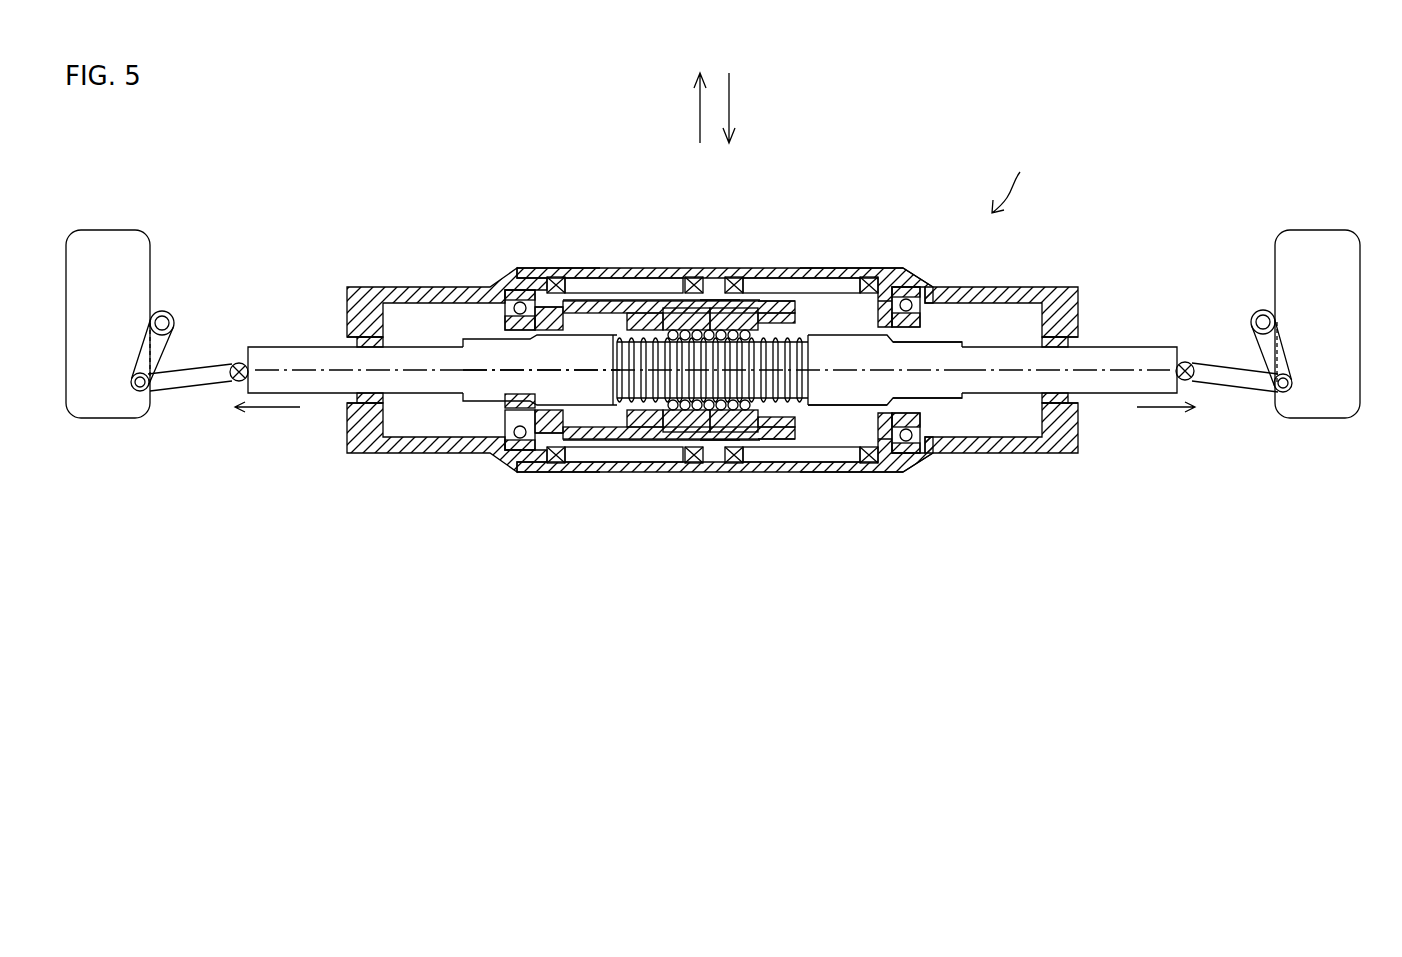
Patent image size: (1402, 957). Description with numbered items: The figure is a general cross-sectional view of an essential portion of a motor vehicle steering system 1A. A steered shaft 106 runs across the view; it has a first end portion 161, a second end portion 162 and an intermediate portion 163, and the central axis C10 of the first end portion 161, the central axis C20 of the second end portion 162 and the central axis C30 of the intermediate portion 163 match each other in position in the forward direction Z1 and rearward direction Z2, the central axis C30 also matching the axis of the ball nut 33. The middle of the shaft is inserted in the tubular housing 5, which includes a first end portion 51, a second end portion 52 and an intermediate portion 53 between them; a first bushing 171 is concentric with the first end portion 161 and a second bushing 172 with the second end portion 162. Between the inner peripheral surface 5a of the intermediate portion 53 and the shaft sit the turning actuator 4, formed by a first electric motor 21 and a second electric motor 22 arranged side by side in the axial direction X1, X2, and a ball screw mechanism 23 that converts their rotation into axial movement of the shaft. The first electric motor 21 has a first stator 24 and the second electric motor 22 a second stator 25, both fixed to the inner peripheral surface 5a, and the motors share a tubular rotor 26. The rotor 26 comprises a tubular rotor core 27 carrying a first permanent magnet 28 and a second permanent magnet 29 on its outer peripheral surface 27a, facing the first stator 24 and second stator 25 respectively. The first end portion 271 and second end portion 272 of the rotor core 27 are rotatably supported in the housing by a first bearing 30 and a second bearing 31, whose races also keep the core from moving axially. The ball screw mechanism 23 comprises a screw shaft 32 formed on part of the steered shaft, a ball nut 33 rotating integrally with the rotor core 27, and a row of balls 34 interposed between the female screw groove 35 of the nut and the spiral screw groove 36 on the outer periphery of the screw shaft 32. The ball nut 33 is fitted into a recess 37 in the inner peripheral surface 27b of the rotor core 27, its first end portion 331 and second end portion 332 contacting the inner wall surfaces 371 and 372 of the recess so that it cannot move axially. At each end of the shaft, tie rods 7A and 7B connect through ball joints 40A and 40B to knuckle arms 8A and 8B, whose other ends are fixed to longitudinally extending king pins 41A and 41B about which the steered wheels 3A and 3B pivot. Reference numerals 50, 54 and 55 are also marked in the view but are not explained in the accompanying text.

The motor vehicle steering system 1A is at (1015, 177).
The steered wheel 3A is at (112, 245).
The steered wheel 3B is at (1318, 240).
The turning actuator 4 is at (712, 318).
The housing 5 is at (786, 258).
The inner peripheral surface 5a is at (713, 310).
The tie rod 7A is at (172, 393).
The tie rod 7B is at (1255, 393).
The knuckle arm 8A is at (140, 366).
The knuckle arm 8B is at (1286, 363).
The first electric motor 21 is at (577, 267).
The second electric motor 22 is at (861, 265).
The ball screw mechanism 23 is at (713, 297).
The first stator 24 is at (625, 286).
The second stator 25 is at (830, 284).
The rotor 26 is at (544, 298).
The rotor core 27 is at (711, 432).
The outer peripheral surface 27a is at (542, 425).
The inner peripheral surface 27b is at (570, 420).
The first permanent magnet 28 is at (707, 363).
The second permanent magnet 29 is at (800, 433).
The first bearing 30 is at (519, 440).
The second bearing 31 is at (905, 440).
The screw shaft 32 is at (834, 416).
The ball nut 33 is at (698, 346).
The balls 34 is at (745, 418).
The female screw groove 35 is at (760, 341).
The spiral screw groove 36 is at (810, 378).
The recess 37 is at (712, 377).
The ball joint 40A is at (227, 381).
The ball joint 40B is at (1197, 381).
The king pin 41A is at (167, 311).
The king pin 41B is at (1259, 311).
The housing 50 is at (711, 336).
The first end portion 51 is at (365, 287).
The second end portion 52 is at (1060, 287).
The intermediate portion 53 is at (738, 322).
The first seal member 54 is at (355, 343).
The second seal member 55 is at (1065, 345).
The steered shaft 106 is at (944, 330).
The first end portion 161 is at (263, 358).
The second end portion 162 is at (1147, 360).
The intermediate portion 163 is at (907, 267).
The first bushing 171 is at (365, 447).
The second bushing 172 is at (1058, 445).
The first end portion 271 is at (492, 428).
The second end portion 272 is at (913, 428).
The first end portion 331 is at (662, 318).
The second end portion 332 is at (757, 316).
The inner wall surface 371 is at (673, 428).
The inner wall surface 372 is at (757, 428).
The central axis C10 is at (312, 374).
The central axis C20 is at (1100, 374).
The central axis C30 is at (480, 368).
The axial direction X1 is at (270, 410).
The axial direction X2 is at (1157, 410).
The forward direction Z1 is at (697, 122).
The rearward direction Z2 is at (732, 97).